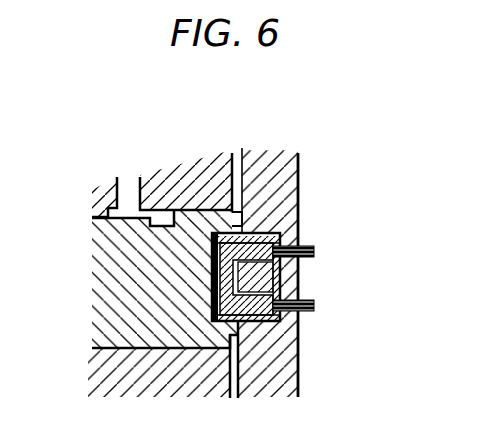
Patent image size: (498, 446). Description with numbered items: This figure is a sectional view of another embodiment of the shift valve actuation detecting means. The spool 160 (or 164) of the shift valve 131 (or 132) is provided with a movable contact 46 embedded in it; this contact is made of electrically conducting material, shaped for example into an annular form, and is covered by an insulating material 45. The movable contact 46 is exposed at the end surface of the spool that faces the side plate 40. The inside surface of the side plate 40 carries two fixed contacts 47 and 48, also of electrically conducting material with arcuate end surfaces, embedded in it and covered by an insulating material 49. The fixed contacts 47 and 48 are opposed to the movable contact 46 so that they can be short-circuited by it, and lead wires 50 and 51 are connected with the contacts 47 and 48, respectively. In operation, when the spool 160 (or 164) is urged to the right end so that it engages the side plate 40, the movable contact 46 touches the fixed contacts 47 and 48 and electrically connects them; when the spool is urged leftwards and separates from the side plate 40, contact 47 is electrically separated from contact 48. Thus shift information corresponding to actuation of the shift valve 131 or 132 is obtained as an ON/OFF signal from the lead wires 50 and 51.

The side plate 40 is at (298, 172).
The insulating material 45 is at (212, 283).
The movable contact 46 is at (222, 236).
The fixed contact 47 is at (294, 206).
The fixed contact 48 is at (272, 323).
The insulating material 49 is at (273, 274).
The lead wire 50 is at (304, 246).
The lead wire 51 is at (307, 311).
The shift valve 131 is at (152, 167).
The shift valve 132 is at (155, 163).
The spool 160 is at (159, 382).
The spool 164 is at (194, 336).